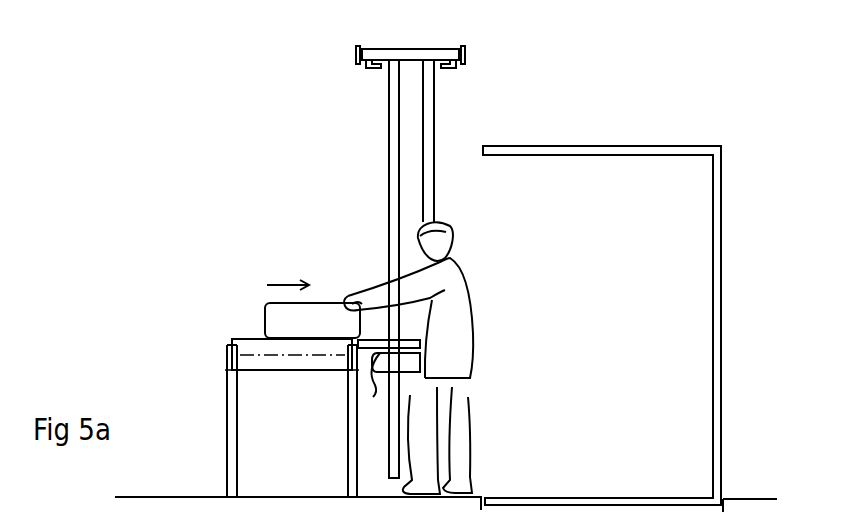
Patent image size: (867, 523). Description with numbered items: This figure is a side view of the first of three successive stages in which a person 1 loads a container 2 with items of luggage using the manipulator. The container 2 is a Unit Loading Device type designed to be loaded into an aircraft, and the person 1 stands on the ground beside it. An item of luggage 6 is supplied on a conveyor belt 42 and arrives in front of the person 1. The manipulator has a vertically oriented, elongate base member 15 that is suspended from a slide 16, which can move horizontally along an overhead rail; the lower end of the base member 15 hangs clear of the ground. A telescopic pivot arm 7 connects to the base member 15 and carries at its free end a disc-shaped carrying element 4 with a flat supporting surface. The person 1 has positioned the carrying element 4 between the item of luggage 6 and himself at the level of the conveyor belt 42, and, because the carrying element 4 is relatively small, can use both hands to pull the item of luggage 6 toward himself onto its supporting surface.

The person 1 is at (463, 333).
The container 2 is at (716, 258).
The carrying element 4 is at (372, 393).
The item of luggage 6 is at (278, 318).
The pivot arm 7 is at (408, 372).
The base member 15 is at (389, 152).
The slide 16 is at (410, 56).
The conveyor belt 42 is at (290, 362).